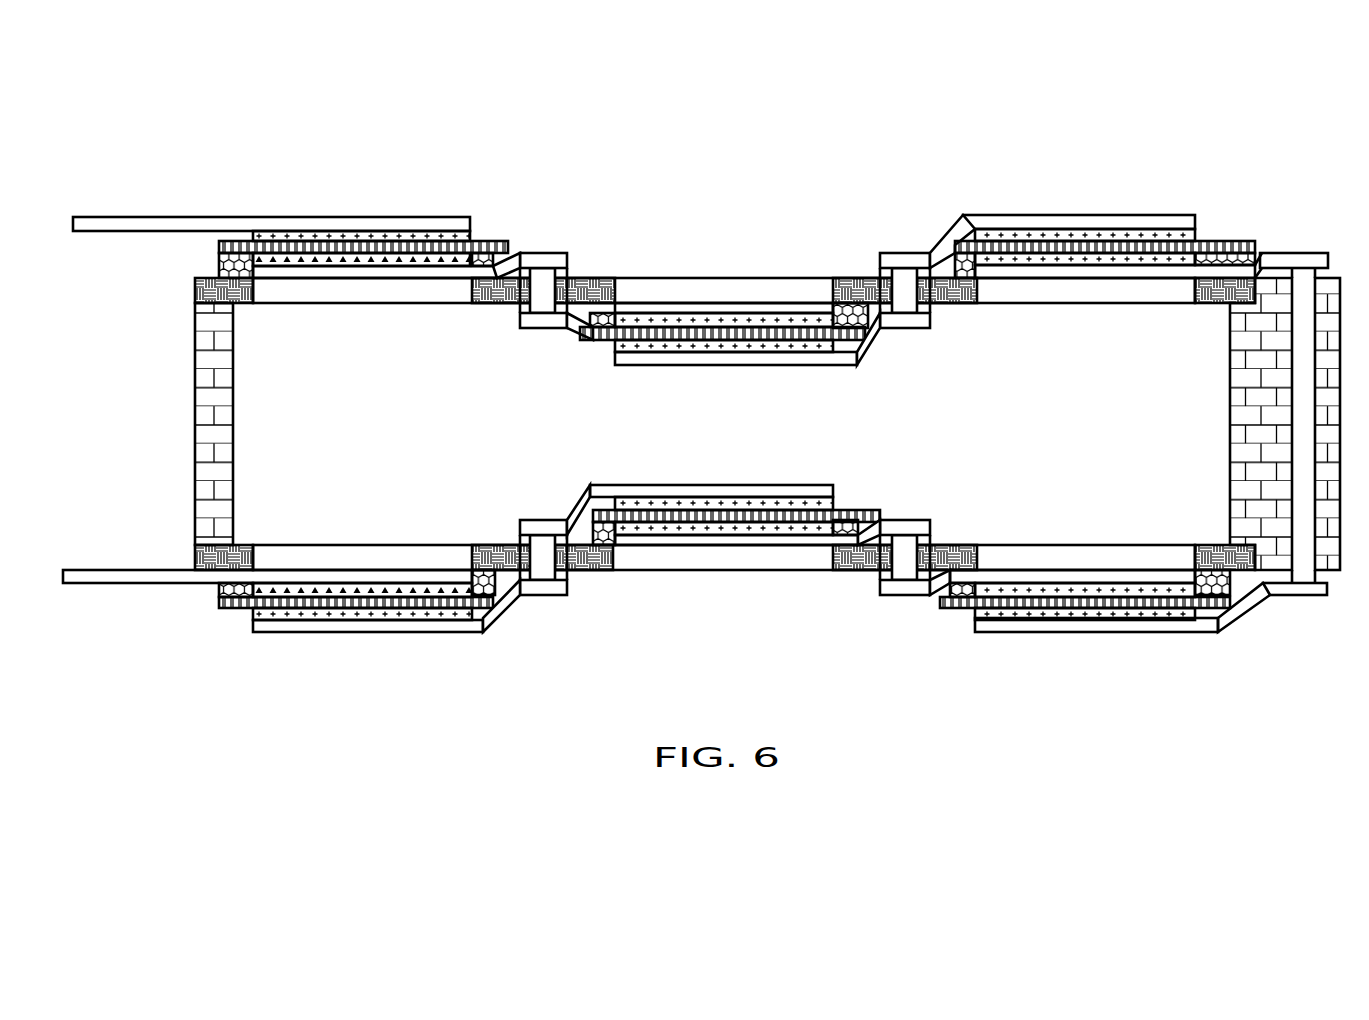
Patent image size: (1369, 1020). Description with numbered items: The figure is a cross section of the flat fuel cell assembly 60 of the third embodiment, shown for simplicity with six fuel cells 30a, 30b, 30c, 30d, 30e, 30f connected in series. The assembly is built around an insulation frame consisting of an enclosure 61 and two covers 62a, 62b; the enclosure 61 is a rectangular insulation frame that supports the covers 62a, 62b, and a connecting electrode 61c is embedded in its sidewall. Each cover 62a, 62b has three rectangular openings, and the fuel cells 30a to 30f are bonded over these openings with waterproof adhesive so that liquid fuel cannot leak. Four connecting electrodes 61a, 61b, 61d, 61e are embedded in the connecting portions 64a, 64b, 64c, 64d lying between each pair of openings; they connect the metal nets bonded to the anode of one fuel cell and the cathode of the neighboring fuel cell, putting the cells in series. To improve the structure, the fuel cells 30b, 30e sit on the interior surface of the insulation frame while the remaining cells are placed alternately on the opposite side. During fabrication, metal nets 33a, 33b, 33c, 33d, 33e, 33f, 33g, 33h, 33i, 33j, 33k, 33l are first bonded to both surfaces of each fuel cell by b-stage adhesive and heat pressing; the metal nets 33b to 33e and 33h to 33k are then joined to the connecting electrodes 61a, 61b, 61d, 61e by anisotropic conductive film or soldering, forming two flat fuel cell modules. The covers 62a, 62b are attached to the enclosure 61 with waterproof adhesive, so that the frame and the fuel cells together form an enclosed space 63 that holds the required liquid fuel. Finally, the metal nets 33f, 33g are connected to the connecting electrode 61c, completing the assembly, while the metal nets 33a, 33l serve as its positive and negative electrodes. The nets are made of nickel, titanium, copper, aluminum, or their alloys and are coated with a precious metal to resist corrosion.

The flat fuel cell assembly 60 is at (90, 113).
The fuel cell 30a is at (373, 207).
The fuel cell 30b is at (731, 300).
The fuel cell 30c is at (1134, 207).
The fuel cell 30d is at (1135, 642).
The fuel cell 30e is at (732, 545).
The fuel cell 30f is at (345, 642).
The metal net 33a is at (157, 217).
The metal net 33b is at (563, 262).
The metal net 33c is at (545, 330).
The metal net 33d is at (905, 330).
The metal net 33e is at (1050, 215).
The metal net 33f is at (1302, 253).
The metal net 33g is at (1302, 597).
The metal net 33h is at (878, 598).
The metal net 33i is at (905, 520).
The metal net 33j is at (545, 520).
The metal net 33k is at (408, 622).
The metal net 33l is at (157, 585).
The enclosure 61 is at (213, 487).
The connecting electrode 61a is at (547, 272).
The connecting electrode 61b is at (905, 272).
The connecting electrode 61c is at (1303, 423).
The connecting electrode 61d is at (905, 597).
The connecting electrode 61e is at (545, 597).
The cover 62a is at (197, 290).
The cover 62b is at (197, 557).
The enclosed space 63 is at (245, 423).
The connecting portion 64a is at (607, 285).
The connecting portion 64b is at (858, 285).
The connecting portion 64c is at (850, 572).
The connecting portion 64d is at (590, 572).